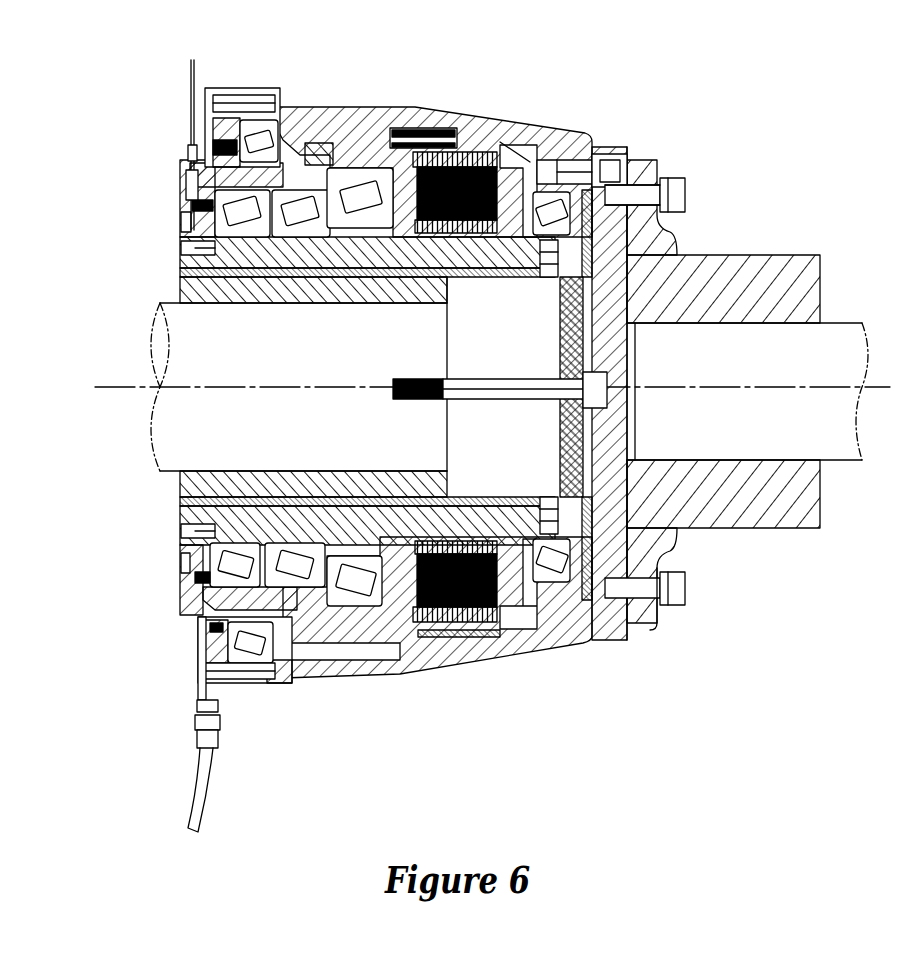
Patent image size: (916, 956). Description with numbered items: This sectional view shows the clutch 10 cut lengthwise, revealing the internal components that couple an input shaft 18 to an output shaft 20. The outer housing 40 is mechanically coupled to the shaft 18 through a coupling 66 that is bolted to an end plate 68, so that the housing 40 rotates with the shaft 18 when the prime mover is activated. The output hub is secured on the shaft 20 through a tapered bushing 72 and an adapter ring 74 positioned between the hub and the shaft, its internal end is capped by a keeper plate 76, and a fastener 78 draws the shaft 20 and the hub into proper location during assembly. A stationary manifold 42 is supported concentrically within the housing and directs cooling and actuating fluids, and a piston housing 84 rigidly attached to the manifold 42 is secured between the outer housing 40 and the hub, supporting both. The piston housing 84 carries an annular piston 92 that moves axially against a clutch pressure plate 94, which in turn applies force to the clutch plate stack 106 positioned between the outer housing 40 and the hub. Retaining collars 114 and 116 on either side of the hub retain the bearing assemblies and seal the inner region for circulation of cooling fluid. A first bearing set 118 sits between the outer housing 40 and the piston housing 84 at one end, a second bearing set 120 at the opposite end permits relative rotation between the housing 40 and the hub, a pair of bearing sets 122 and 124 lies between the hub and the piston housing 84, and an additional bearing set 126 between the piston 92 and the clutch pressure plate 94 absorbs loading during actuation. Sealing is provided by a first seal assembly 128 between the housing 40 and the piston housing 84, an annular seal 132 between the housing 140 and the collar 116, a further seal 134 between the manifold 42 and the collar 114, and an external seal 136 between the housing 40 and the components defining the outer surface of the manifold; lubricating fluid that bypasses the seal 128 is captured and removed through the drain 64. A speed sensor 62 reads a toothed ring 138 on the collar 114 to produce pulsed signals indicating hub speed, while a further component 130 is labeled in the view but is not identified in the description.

The clutch 10 is at (709, 109).
The shaft 18 is at (747, 391).
The shaft 20 is at (299, 387).
The outer housing 40 is at (506, 140).
The manifold 42 is at (185, 180).
The speed sensor 62 is at (190, 164).
The drain 64 is at (212, 756).
The coupling 66 is at (820, 264).
The end plate 68 is at (612, 270).
The tapered bushing 72 is at (180, 274).
The adapter ring 74 is at (180, 290).
The keeper plate 76 is at (600, 507).
The fastener 78 is at (470, 397).
The piston housing 84 is at (298, 147).
The annular piston 92 is at (390, 128).
The clutch pressure plate 94 is at (463, 140).
The clutch plate stack 106 is at (570, 150).
The retaining collar 114 is at (203, 615).
The retaining collar 116 is at (625, 567).
The first bearing set 118 is at (252, 140).
The second bearing set 120 is at (640, 178).
The bearing set 122 is at (232, 240).
The bearing set 124 is at (284, 240).
The additional bearing set 126 is at (362, 232).
The first seal assembly 128 is at (222, 150).
The seal 130 is at (190, 208).
The annular seal 132 is at (625, 205).
The seal 134 is at (190, 560).
The external seal 136 is at (233, 92).
The toothed ring 138 is at (183, 228).
The housing 140 is at (567, 277).